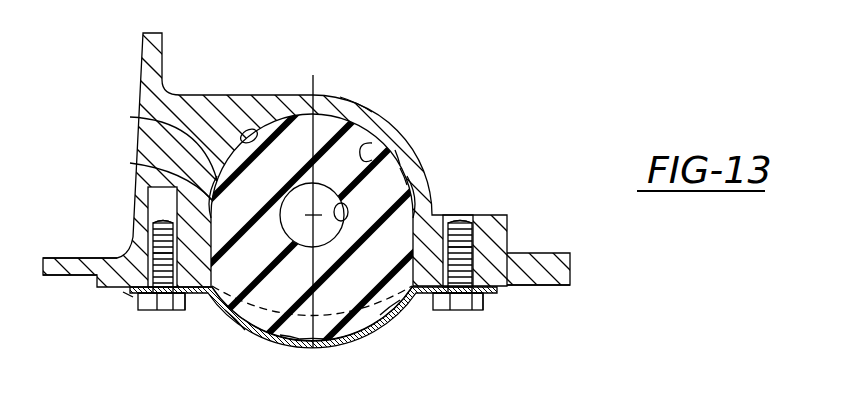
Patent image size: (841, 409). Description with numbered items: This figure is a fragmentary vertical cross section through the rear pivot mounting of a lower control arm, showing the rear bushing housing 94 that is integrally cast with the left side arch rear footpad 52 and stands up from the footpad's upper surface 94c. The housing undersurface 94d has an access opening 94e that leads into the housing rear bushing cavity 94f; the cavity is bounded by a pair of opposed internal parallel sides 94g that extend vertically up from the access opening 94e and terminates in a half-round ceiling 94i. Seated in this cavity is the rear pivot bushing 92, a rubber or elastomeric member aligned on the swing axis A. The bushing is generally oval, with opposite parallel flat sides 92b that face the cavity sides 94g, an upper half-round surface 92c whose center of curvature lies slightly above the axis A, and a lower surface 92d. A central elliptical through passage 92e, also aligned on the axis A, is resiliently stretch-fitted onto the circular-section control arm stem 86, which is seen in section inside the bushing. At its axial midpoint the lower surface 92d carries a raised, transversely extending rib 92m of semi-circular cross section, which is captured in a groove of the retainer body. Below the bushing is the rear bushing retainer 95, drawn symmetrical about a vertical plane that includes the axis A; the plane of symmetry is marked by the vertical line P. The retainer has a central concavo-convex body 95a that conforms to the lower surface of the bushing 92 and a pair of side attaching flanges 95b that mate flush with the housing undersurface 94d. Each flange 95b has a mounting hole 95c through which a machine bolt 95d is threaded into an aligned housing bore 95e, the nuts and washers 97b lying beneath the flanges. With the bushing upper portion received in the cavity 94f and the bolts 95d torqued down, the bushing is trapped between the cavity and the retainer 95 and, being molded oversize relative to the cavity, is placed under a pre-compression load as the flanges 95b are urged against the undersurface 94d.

The left side arch rear footpad 52 is at (555, 251).
The control arm circular-section stem 86 is at (130, 117).
The rear pivot bushing 92 is at (283, 108).
The flat sides 92b is at (400, 178).
The upper half-round surface 92c is at (372, 112).
The rear bushing lower surface 92d is at (306, 328).
The central elliptical-shaped through passage 92e is at (400, 162).
The raised transversely extending rib 92m is at (293, 331).
The rear bushing housing 94 is at (368, 98).
The upper surface of the cradle rear footpad 94c is at (545, 272).
The housing undersurface 94d is at (107, 287).
The access opening 94e is at (398, 308).
The housing rear bushing cavity 94f is at (378, 155).
The internal parallel sides 94g is at (130, 163).
The half-round ceiling 94i is at (250, 130).
The rear bushing retainer 95 is at (396, 338).
The central concavo-convex body 95a is at (236, 326).
The side attaching flanges 95b is at (187, 313).
The mounting hole 95c is at (143, 297).
The machine bolt 95d is at (163, 223).
The housing bore 95e is at (153, 257).
The washer 97b is at (182, 291).
The swing axis A is at (300, 188).
The axis P is at (313, 75).